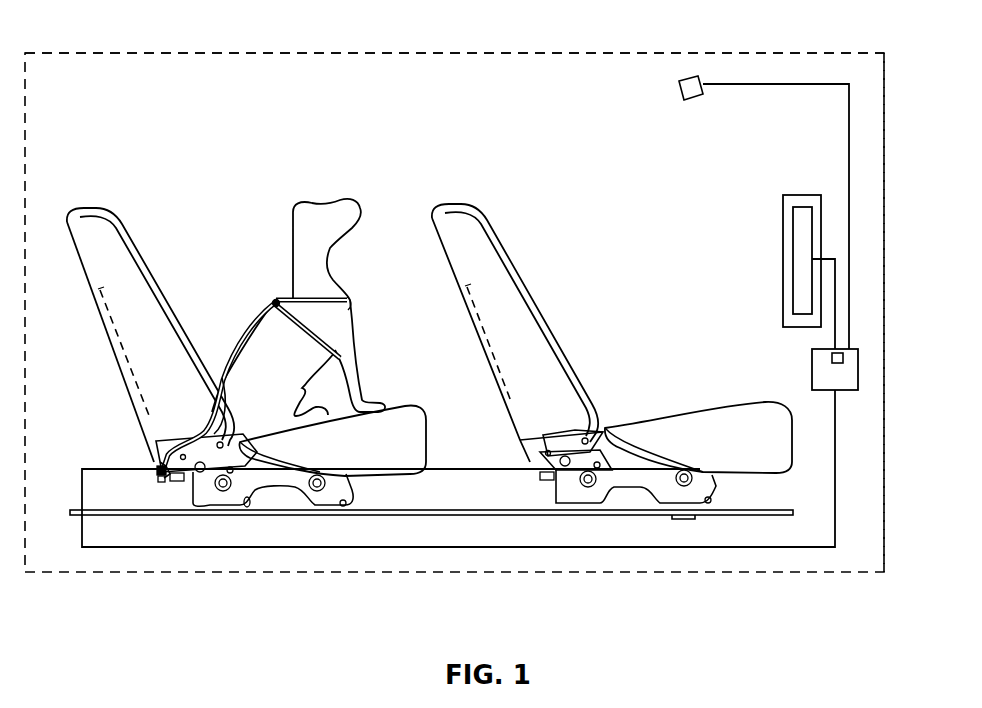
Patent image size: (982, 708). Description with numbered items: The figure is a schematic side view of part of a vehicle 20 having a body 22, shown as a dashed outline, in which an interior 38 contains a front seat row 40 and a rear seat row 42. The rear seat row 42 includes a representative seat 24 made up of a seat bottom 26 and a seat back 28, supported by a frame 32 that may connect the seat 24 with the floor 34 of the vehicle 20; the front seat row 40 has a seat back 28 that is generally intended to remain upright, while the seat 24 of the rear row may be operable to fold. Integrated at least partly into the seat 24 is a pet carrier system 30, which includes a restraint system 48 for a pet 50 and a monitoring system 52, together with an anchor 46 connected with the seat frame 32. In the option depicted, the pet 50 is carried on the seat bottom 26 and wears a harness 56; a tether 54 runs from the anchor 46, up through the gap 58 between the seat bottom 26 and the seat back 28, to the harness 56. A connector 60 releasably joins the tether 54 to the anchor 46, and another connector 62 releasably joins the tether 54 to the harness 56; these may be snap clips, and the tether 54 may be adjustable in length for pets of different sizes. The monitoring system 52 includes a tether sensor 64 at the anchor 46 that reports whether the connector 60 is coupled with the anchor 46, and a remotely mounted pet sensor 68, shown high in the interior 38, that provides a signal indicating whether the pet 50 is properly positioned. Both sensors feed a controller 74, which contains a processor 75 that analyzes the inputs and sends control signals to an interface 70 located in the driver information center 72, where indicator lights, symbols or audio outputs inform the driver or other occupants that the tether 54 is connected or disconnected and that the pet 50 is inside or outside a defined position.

The vehicle 20 is at (783, 44).
The body 22 is at (884, 178).
The seat 24 is at (140, 319).
The seat bottom 26 is at (378, 448).
The seat back 28 is at (120, 261).
The pet carrier system 30 is at (256, 321).
The frame 32 is at (352, 505).
The floor 34 is at (500, 510).
The interior 38 is at (326, 126).
The front seat row 40 is at (602, 300).
The rear seat row 42 is at (236, 299).
The anchor 46 is at (161, 482).
The restraint system 48 is at (283, 357).
The pet 50 is at (341, 206).
The monitoring system 52 is at (842, 262).
The tether 54 is at (250, 316).
The harness 56 is at (354, 314).
The gap 58 is at (198, 437).
The connector 60 is at (158, 472).
The connector 62 is at (275, 300).
The tether sensor 64 is at (158, 463).
The pet sensor 68 is at (678, 92).
The interface 70 is at (793, 227).
The driver information center 72 is at (802, 194).
The controller 74 is at (860, 386).
The processor 75 is at (845, 358).